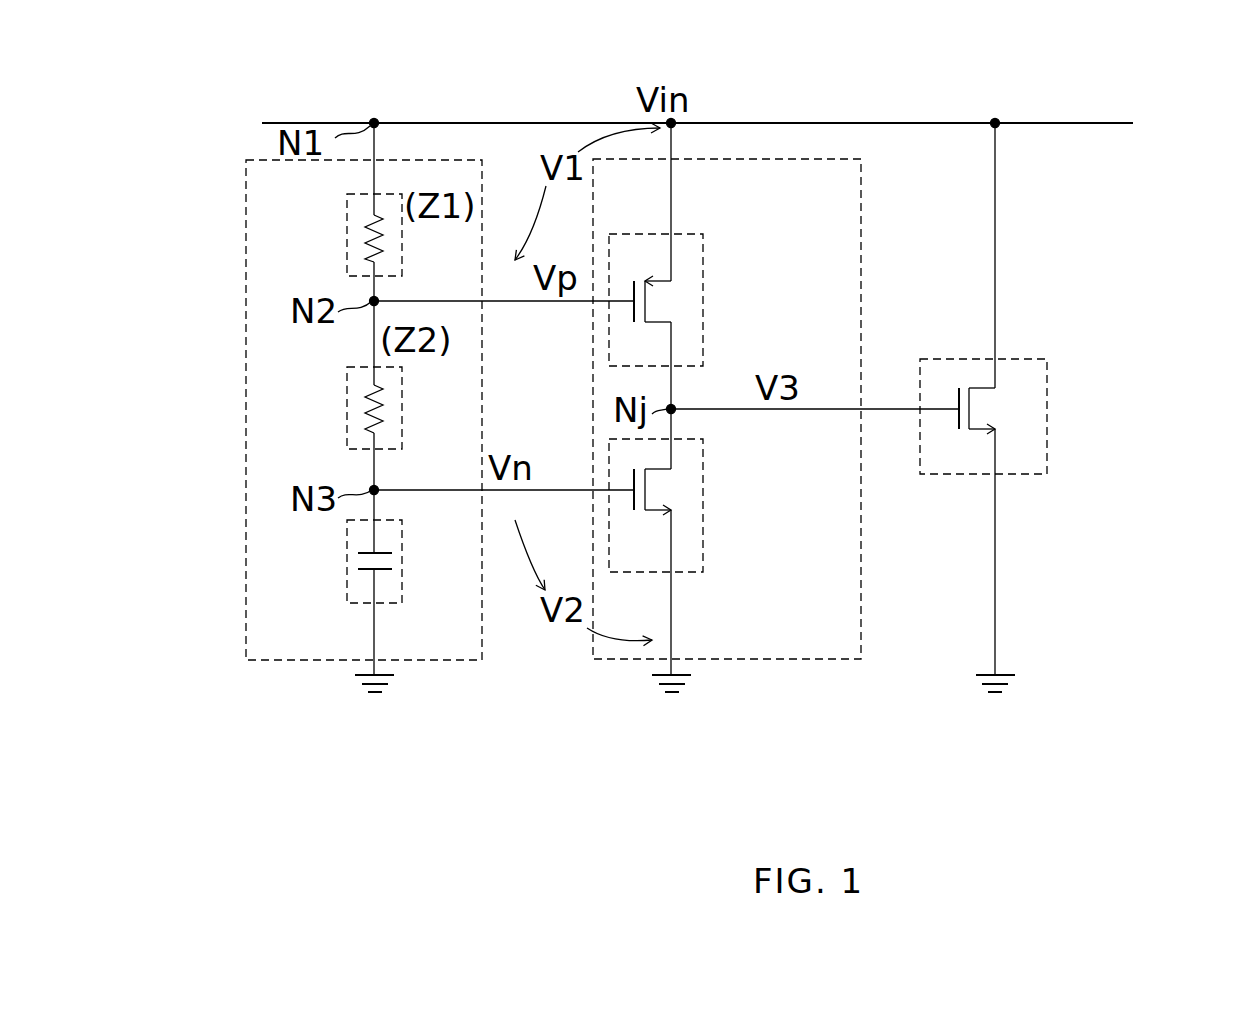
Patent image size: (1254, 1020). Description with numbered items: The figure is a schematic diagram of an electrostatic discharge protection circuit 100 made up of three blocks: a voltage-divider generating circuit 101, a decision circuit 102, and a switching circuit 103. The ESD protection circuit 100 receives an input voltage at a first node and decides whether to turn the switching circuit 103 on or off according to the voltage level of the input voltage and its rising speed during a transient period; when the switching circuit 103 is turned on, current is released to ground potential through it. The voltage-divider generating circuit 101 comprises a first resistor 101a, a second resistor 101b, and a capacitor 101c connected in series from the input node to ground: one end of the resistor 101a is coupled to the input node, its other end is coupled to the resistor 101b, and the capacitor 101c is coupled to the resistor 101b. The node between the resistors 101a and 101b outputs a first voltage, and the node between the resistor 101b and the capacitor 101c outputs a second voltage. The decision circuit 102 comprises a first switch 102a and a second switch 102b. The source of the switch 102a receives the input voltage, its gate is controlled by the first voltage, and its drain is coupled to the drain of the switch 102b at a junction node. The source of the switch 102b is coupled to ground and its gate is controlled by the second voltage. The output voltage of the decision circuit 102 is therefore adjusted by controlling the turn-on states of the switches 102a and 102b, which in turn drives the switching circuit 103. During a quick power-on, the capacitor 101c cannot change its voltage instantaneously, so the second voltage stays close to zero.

The ESD protection circuit 100 is at (218, 81).
The voltage-divider generating circuit 101 is at (246, 410).
The resistor 101a is at (347, 236).
The resistor 101b is at (347, 408).
The capacitor 101c is at (347, 590).
The decision circuit 102 is at (862, 350).
The switch 102a is at (703, 300).
The switch 102b is at (703, 527).
The switching circuit 103 is at (1047, 410).